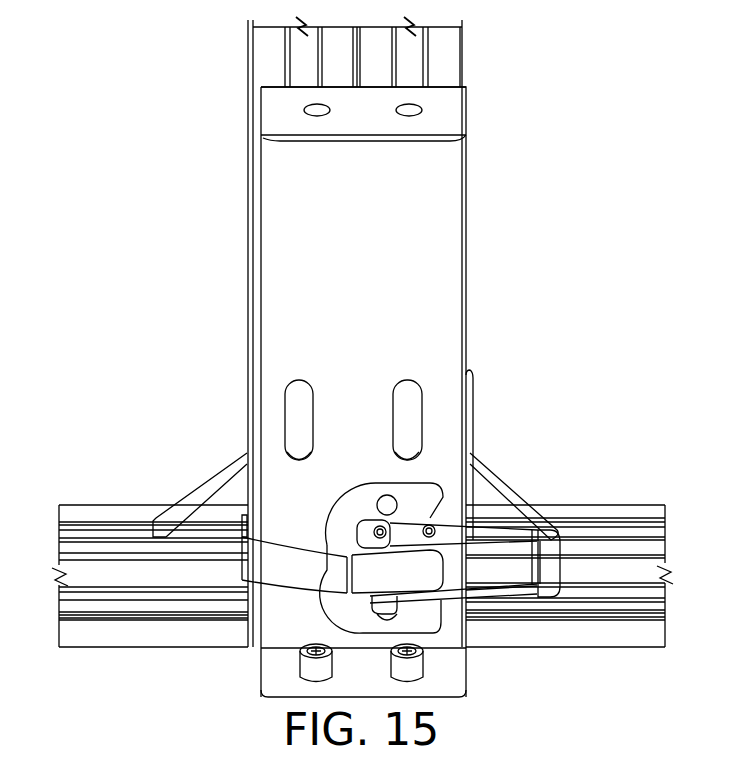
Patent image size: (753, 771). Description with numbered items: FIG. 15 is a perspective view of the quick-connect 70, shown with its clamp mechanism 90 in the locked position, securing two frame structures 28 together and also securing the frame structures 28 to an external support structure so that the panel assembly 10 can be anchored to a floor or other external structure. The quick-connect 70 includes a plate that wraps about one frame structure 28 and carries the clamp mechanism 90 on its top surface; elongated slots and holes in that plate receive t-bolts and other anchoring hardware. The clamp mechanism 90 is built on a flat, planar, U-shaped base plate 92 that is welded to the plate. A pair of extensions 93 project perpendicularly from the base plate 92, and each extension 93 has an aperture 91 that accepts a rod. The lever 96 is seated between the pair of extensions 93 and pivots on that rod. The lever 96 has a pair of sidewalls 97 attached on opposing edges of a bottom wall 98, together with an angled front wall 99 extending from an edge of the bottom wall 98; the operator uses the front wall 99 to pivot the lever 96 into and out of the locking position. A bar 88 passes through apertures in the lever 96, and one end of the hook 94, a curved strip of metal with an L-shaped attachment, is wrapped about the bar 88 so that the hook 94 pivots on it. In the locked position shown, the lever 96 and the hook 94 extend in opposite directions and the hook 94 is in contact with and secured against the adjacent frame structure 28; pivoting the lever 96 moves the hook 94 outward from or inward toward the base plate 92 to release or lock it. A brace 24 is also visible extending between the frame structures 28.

The panel assembly 10 is at (59, 315).
The brace strut 24 is at (198, 490).
The frame structure 28 is at (275, 43).
The quick-connect 70 is at (455, 350).
The bar 88 is at (417, 527).
The clamp mechanism 90 is at (257, 563).
The aperture 91 is at (363, 520).
The base plate 92 is at (340, 608).
The extension 93 is at (387, 505).
The hook 94 is at (302, 572).
The lever 96 is at (515, 528).
The sidewall 97 is at (557, 520).
The bottom wall 98 is at (513, 600).
The front wall 99 is at (548, 565).